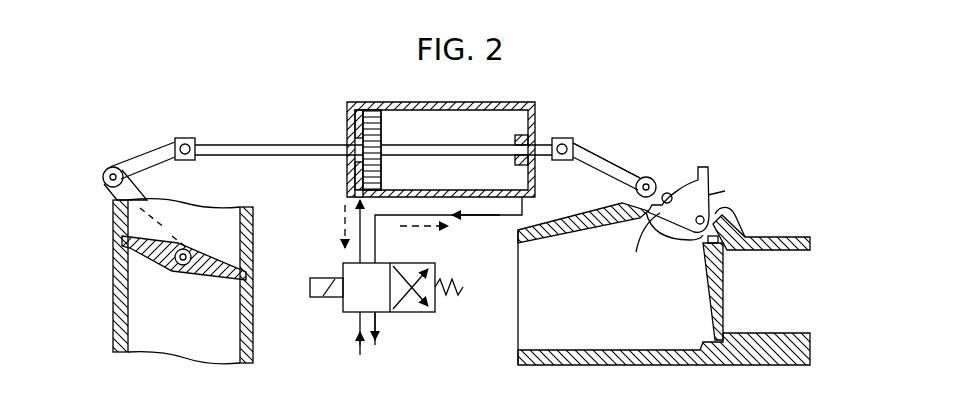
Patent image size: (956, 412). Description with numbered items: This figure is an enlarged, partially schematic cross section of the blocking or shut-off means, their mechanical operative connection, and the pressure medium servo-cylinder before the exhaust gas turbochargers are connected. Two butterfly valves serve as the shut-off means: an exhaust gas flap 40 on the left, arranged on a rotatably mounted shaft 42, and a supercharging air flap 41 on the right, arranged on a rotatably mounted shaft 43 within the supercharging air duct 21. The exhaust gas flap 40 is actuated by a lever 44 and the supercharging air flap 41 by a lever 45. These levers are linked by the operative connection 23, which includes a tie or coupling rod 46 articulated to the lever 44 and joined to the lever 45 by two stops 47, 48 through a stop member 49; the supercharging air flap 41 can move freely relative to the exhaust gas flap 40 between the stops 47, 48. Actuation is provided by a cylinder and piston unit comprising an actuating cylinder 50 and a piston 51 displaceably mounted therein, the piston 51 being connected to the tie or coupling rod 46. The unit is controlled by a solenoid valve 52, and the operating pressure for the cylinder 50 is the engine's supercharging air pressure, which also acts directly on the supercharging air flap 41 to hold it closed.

The air duct 21 is at (551, 328).
The operative connection 23 is at (595, 142).
The exhaust gas flap 40 is at (207, 278).
The supercharging air flap 41 is at (700, 300).
The shaft 42 is at (194, 252).
The shaft 43 is at (722, 226).
The lever 44 is at (130, 192).
The lever 45 is at (712, 196).
The tie or coupling rod 46 is at (225, 143).
The stop 47 is at (697, 174).
The stop 48 is at (650, 228).
The stop member 49 is at (662, 176).
The actuating cylinder 50 is at (352, 118).
The piston 51 is at (375, 135).
The solenoid valve 52 is at (408, 325).